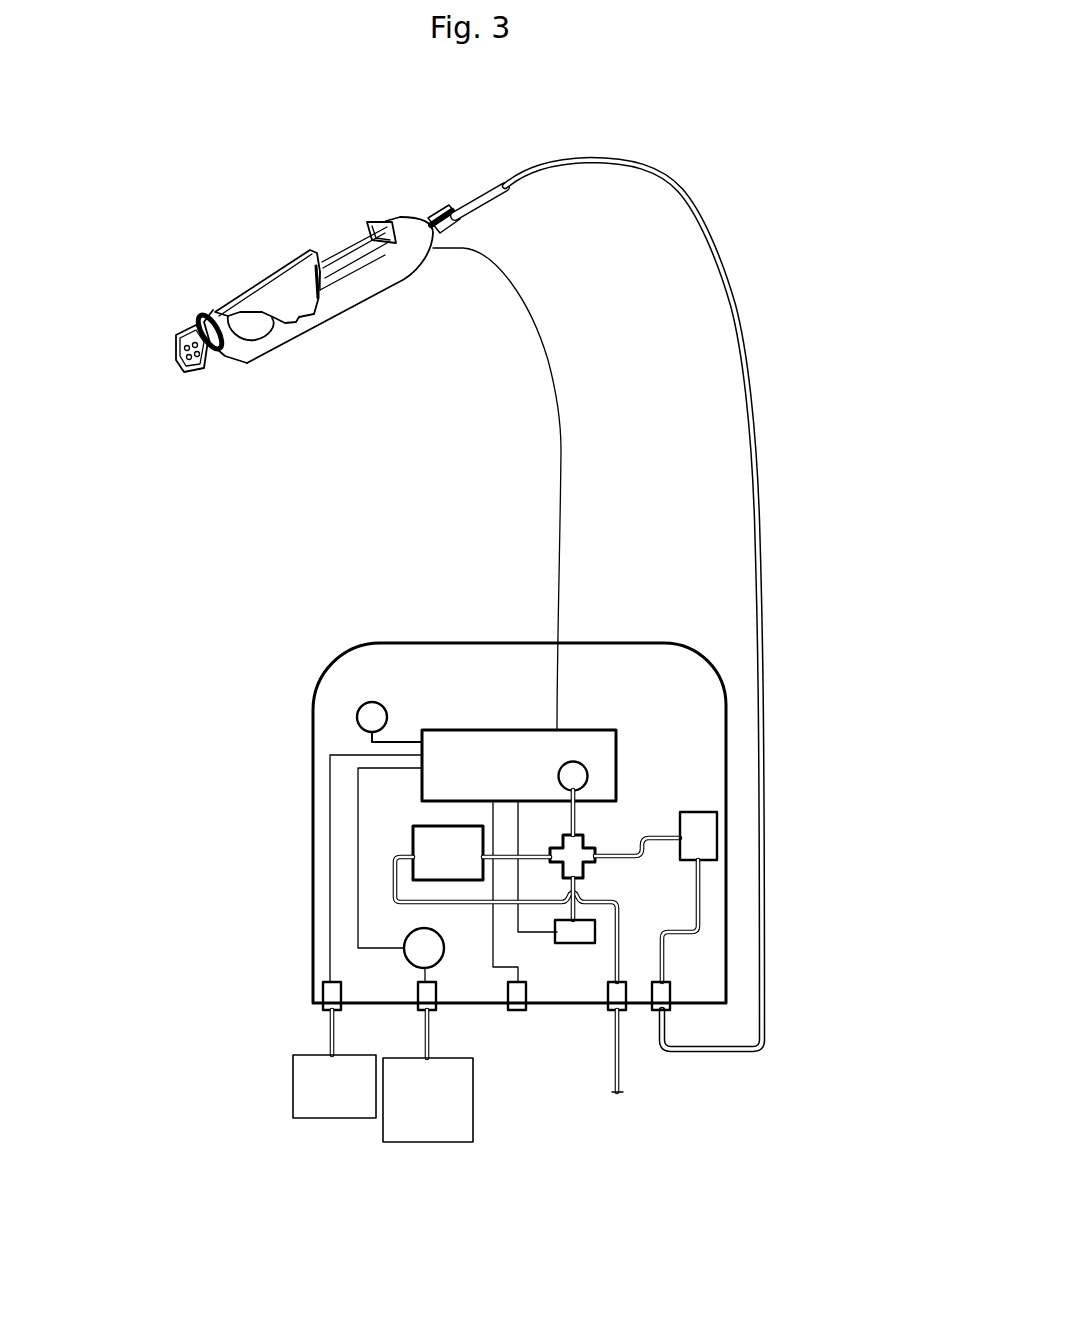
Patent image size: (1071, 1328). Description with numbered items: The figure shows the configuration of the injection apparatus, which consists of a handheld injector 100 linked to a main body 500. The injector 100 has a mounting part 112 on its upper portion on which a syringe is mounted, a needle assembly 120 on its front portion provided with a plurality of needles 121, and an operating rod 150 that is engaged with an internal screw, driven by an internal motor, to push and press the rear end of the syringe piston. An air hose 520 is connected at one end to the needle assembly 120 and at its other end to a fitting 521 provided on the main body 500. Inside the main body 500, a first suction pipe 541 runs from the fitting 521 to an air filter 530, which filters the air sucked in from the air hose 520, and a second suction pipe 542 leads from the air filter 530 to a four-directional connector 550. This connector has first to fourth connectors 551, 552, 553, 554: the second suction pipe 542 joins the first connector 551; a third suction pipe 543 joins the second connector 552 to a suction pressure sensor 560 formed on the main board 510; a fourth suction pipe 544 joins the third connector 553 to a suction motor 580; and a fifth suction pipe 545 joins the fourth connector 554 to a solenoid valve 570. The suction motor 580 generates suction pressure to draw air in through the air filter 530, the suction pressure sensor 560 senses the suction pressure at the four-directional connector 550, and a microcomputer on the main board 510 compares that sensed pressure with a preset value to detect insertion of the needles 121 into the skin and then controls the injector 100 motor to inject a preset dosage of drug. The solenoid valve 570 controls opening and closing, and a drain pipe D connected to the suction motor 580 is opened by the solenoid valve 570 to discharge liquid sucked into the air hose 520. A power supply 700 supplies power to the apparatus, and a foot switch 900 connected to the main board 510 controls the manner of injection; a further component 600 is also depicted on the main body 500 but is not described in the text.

The injector 100 is at (324, 208).
The mounting part 112 is at (268, 270).
The needle assembly 120 is at (200, 320).
The needles 121 is at (185, 341).
The operating rod 150 is at (375, 222).
The main body 500 is at (322, 682).
The main board 510 is at (500, 738).
The air hose 520 is at (762, 855).
The fitting 521 is at (668, 1008).
The air filter 530 is at (715, 835).
The first suction pipe 541 is at (698, 912).
The second suction pipe 542 is at (655, 835).
The third suction pipe 543 is at (592, 830).
The fourth suction pipe 544 is at (563, 872).
The fifth suction pipe 545 is at (397, 903).
The four-directional connector 550 is at (592, 830).
The first connector 551 is at (597, 870).
The second connector 552 is at (565, 833).
The third connector 553 is at (575, 878).
The fourth connector 554 is at (597, 872).
The suction pressure sensor 560 is at (573, 775).
The solenoid valve 570 is at (582, 943).
The suction motor 580 is at (413, 842).
The connector 600 is at (420, 953).
The power supply 700 is at (429, 1123).
The foot switch 900 is at (307, 1107).
The drain pipe D is at (613, 1092).